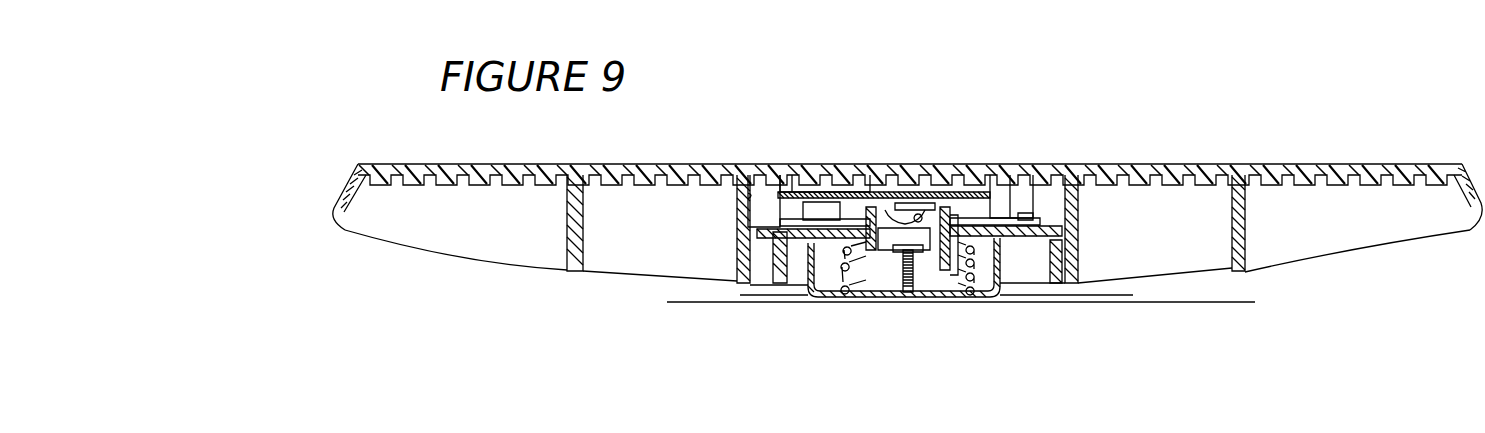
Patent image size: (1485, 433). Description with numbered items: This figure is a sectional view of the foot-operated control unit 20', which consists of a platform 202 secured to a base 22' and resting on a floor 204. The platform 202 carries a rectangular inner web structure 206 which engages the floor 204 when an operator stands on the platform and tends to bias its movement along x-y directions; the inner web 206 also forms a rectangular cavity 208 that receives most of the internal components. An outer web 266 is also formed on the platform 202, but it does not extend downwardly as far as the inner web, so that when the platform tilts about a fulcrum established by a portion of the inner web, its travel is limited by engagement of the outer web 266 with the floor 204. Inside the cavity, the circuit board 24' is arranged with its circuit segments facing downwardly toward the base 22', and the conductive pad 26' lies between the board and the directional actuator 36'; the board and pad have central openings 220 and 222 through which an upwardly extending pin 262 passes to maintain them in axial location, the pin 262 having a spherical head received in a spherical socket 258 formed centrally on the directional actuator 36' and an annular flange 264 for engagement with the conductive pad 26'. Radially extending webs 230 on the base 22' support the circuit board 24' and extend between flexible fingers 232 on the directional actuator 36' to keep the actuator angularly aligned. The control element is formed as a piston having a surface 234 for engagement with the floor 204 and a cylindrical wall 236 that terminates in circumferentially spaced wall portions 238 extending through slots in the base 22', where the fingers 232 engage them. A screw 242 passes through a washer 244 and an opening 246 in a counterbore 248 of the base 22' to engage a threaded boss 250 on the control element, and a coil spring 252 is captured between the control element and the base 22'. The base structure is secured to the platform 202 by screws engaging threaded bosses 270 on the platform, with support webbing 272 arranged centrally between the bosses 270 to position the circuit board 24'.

The foot-operated control unit 20' is at (907, 160).
The platform 202 is at (1083, 167).
The floor 204 is at (1180, 302).
The inner web structure 206 is at (736, 270).
The rectangular cavity 208 is at (752, 196).
The base 22' is at (1039, 235).
The central opening 220 is at (918, 212).
The central opening 222 is at (912, 207).
The radially extending webs 230 is at (800, 210).
The radially extending flexible fingers 232 is at (778, 231).
The surface 234 is at (995, 298).
The cylindrical wall 236 is at (956, 291).
The wall portions 238 is at (790, 248).
The circuit board 24' is at (671, 203).
The screw 242 is at (912, 282).
The washer 244 is at (893, 262).
The opening 246 is at (922, 292).
The counterbore 248 is at (1020, 216).
The threaded boss 250 is at (925, 281).
The coil spring 252 is at (842, 263).
The spherical socket 258 is at (904, 240).
The conductive pad 26' is at (825, 159).
The pin 262 is at (955, 222).
The annular flange 264 is at (965, 185).
The outer web 266 is at (566, 266).
The threaded bosses 270 is at (788, 187).
The support webbing 272 is at (836, 196).
The directional actuator 36' is at (954, 212).